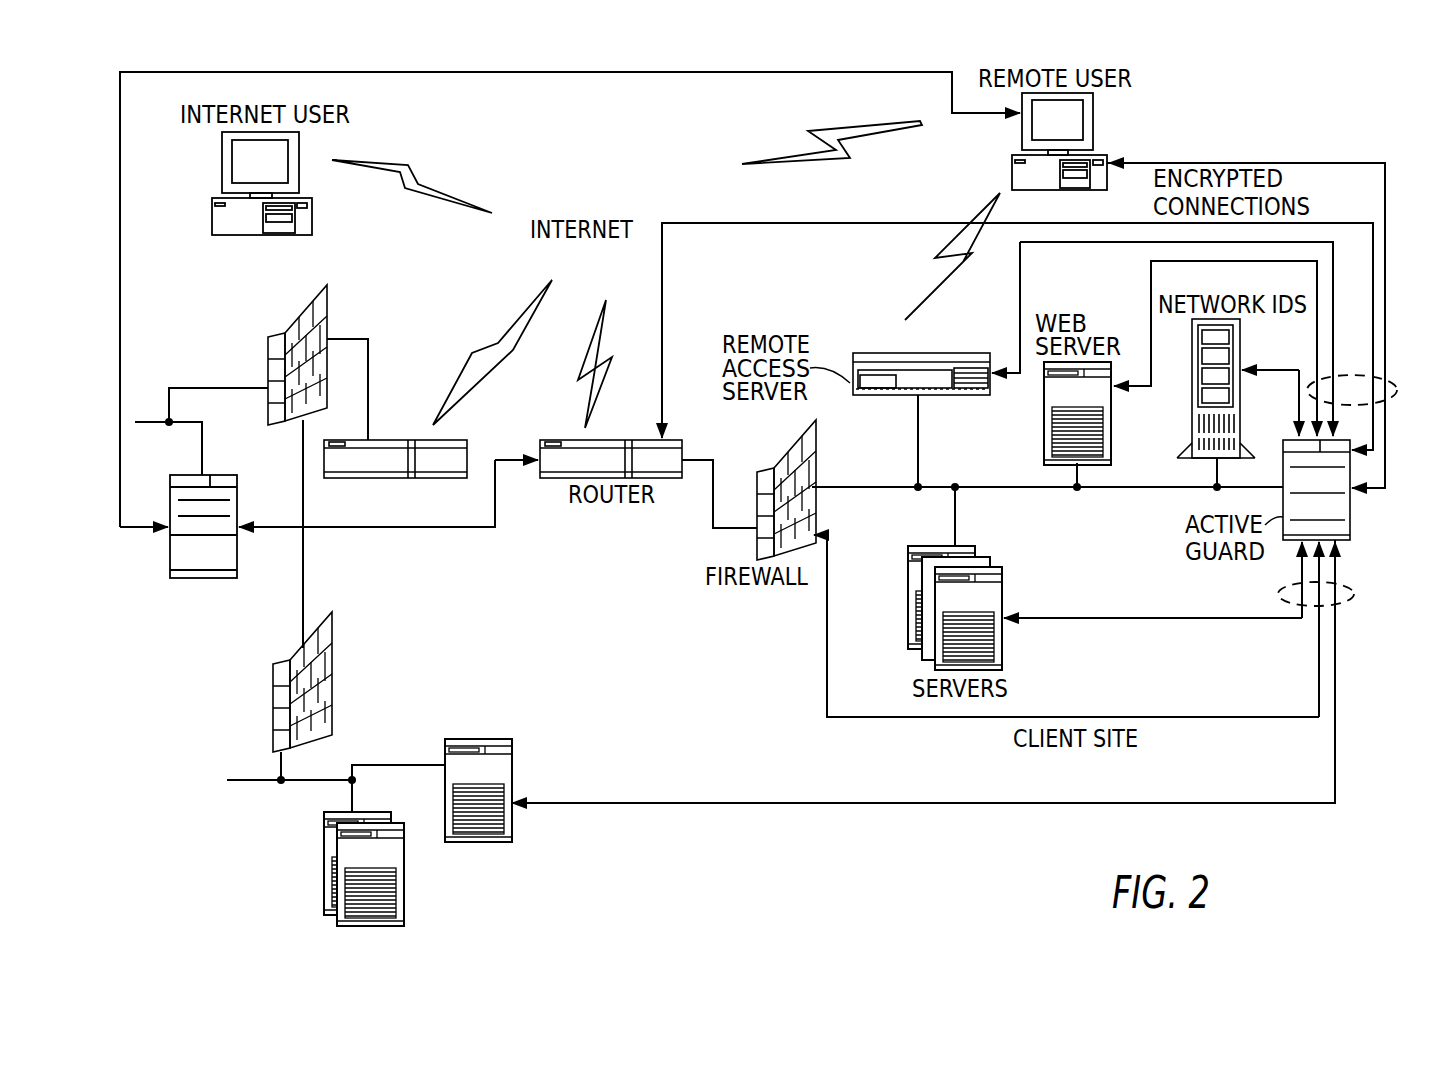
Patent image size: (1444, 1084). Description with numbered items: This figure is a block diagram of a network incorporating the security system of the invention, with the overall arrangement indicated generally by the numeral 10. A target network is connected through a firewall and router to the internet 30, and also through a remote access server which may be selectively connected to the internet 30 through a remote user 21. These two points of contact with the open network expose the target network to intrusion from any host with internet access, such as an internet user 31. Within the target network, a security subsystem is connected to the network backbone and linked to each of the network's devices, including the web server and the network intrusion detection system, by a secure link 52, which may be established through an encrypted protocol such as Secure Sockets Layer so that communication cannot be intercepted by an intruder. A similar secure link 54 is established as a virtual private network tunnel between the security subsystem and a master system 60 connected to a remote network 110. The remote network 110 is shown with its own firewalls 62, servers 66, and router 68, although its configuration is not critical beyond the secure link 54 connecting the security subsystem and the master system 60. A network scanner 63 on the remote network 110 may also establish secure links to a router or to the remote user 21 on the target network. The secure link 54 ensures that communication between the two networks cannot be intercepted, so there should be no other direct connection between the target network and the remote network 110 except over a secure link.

The network security system 10 is at (1368, 140).
The remote user 21 is at (1093, 113).
The internet 30 is at (600, 200).
The internet user 31 is at (222, 170).
The secure link 52 is at (1298, 378).
The secure link 54 is at (1100, 803).
The master system 60 is at (505, 739).
The firewalls 62 is at (300, 302).
The network scanner 63 is at (252, 590).
The servers 66 is at (404, 872).
The router 68 is at (395, 477).
The remote network 110 is at (190, 708).